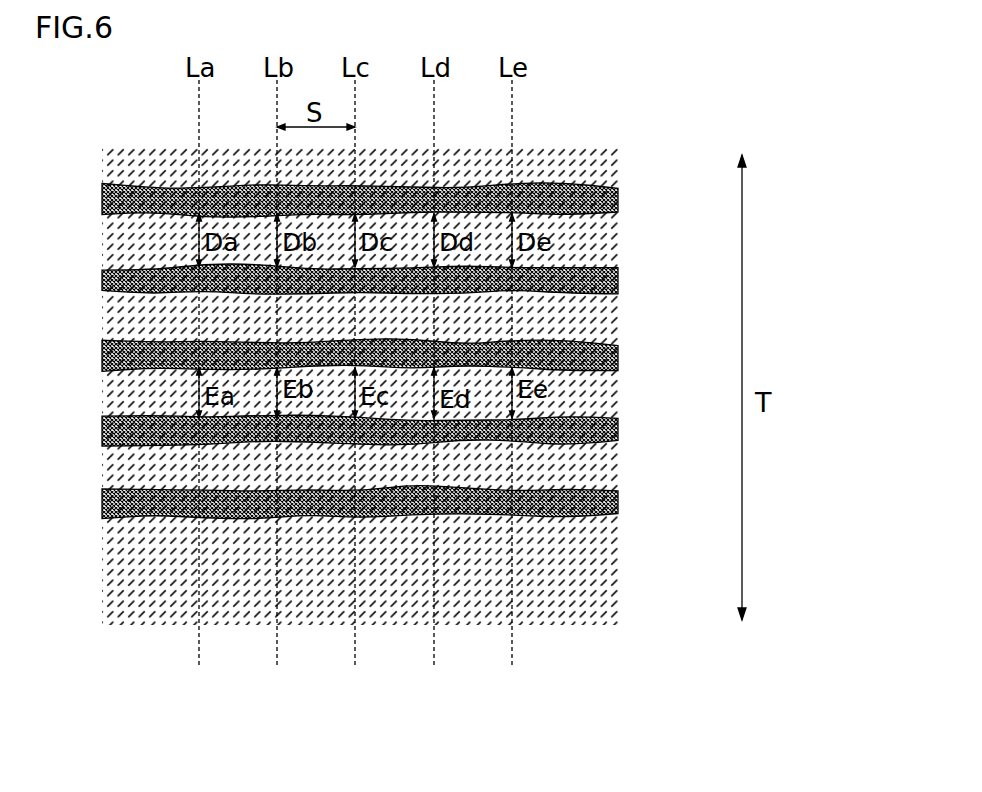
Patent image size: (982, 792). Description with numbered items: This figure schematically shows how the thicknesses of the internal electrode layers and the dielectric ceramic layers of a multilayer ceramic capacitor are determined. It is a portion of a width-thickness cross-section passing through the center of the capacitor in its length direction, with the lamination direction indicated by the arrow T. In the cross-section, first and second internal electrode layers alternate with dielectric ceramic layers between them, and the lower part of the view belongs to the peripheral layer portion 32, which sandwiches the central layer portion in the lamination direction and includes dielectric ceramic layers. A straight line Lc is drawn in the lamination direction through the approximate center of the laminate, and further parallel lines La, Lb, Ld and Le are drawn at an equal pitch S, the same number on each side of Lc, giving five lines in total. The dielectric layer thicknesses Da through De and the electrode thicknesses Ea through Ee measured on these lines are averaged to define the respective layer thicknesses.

The peripheral layer portion 32 is at (605, 588).